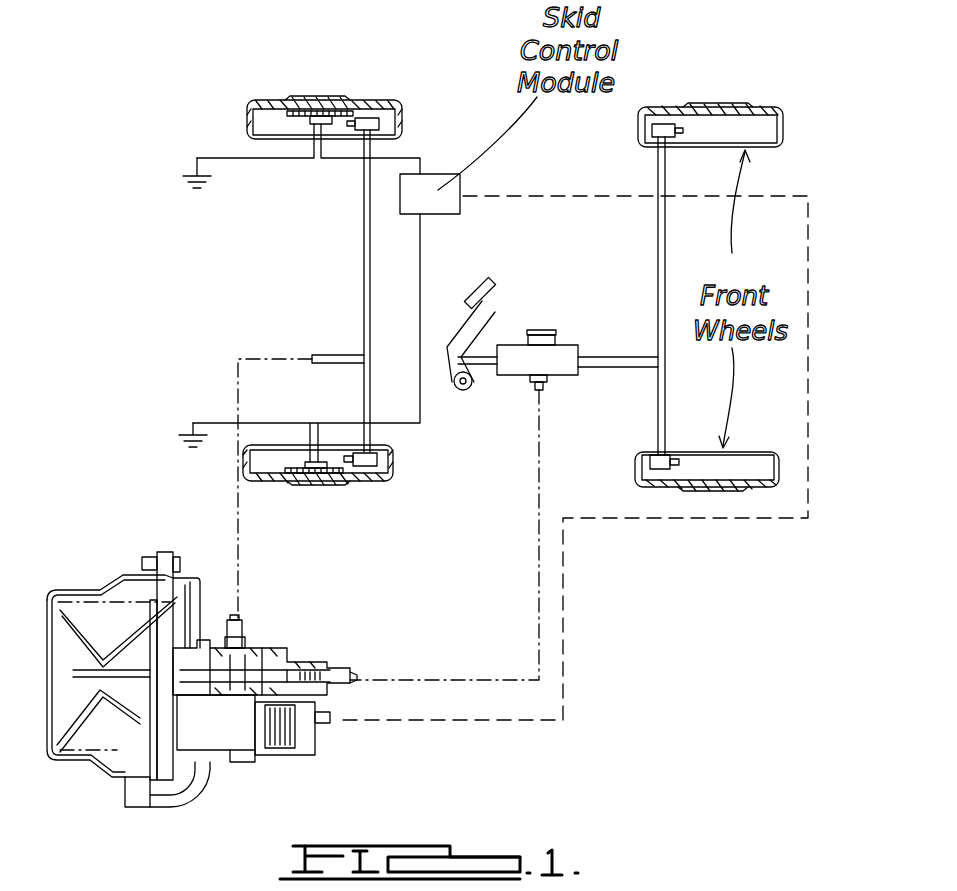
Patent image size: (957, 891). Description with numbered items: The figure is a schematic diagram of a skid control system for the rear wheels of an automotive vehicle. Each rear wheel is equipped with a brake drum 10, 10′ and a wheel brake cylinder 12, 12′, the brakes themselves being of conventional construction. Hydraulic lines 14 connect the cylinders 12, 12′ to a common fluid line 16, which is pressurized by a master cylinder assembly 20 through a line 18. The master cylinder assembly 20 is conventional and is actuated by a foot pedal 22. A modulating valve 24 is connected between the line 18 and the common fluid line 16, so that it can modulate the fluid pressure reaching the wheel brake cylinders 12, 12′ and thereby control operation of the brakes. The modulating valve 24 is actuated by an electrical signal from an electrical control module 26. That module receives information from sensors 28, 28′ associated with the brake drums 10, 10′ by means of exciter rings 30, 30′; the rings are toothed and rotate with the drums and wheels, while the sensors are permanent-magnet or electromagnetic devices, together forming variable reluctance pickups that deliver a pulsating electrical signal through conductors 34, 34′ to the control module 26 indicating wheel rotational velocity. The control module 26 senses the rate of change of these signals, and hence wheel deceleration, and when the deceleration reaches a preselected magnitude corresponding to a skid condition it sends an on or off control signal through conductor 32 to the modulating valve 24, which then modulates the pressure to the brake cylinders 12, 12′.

The brake drum 10 is at (249, 108).
The wheel brake cylinder 12 is at (370, 118).
The hydraulic lines 14 is at (363, 258).
The common fluid line 16 is at (337, 328).
The line 18 is at (343, 668).
The master cylinder assembly 20 is at (569, 342).
The foot pedal 22 is at (490, 285).
The modulating valve 24 is at (70, 565).
The electrical control module 26 is at (398, 211).
The sensor 28 is at (312, 122).
The exciter ring 30 is at (338, 138).
The conductor 32 is at (548, 194).
The conductor 34 is at (420, 174).
The brake drum 10′ is at (395, 452).
The wheel brake cylinder 12′ is at (367, 476).
The sensor 28′ is at (303, 460).
The exciter ring 30′ is at (340, 474).
The conductor 34′ is at (422, 250).